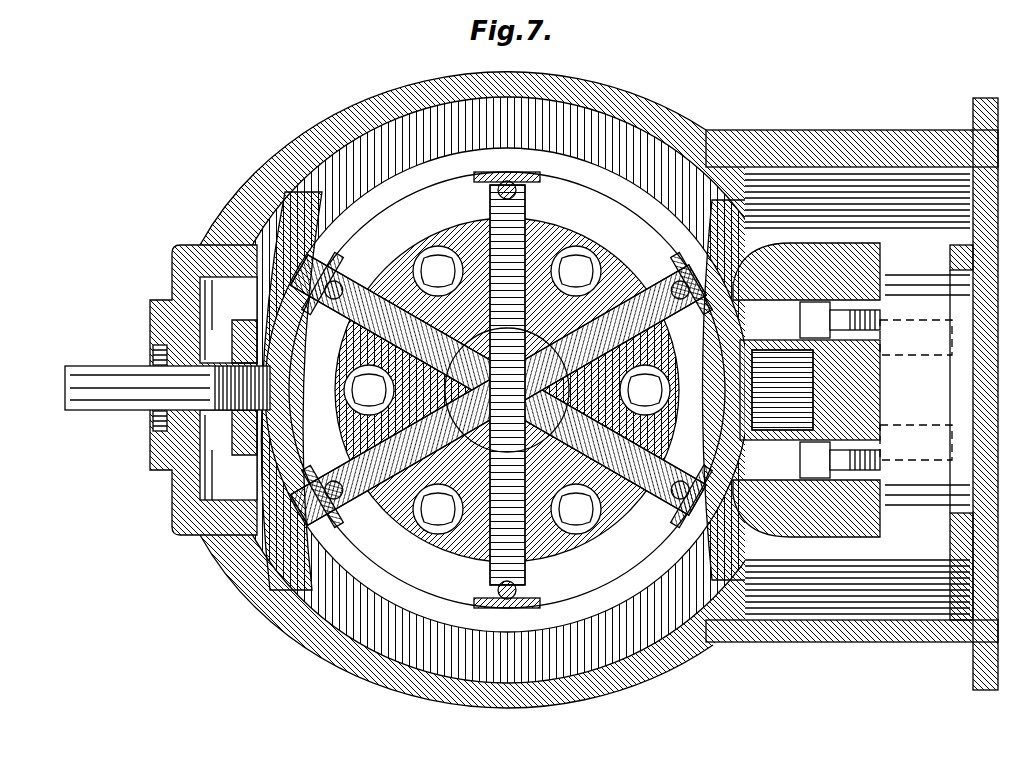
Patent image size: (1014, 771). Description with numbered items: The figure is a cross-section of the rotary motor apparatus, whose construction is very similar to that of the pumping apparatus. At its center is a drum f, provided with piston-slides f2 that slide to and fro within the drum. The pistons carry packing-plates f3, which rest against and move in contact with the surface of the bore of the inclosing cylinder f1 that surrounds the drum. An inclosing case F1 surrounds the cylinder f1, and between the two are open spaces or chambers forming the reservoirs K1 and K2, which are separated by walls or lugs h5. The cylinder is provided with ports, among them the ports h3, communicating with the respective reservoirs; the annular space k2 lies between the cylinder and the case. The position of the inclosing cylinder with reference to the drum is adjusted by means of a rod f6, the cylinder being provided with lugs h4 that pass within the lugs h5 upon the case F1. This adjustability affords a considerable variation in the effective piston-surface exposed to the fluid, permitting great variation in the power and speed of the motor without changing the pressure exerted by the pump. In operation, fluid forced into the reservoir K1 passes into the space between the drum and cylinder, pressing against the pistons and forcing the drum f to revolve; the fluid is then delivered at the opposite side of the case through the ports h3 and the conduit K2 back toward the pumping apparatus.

The reservoir K1 is at (625, 688).
The reservoir (conduit) K2 is at (612, 133).
The inner ring k2 is at (507, 393).
The inclosing cylinder f1 is at (507, 390).
The drum f is at (443, 538).
The piston-slides f2 is at (498, 385).
The packing-plates f3 is at (507, 397).
The ports h3 is at (507, 176).
The lugs h4 is at (228, 390).
The lugs (walls) h5 is at (200, 263).
The rod f6 is at (65, 380).
The inclosing case F1 is at (858, 640).